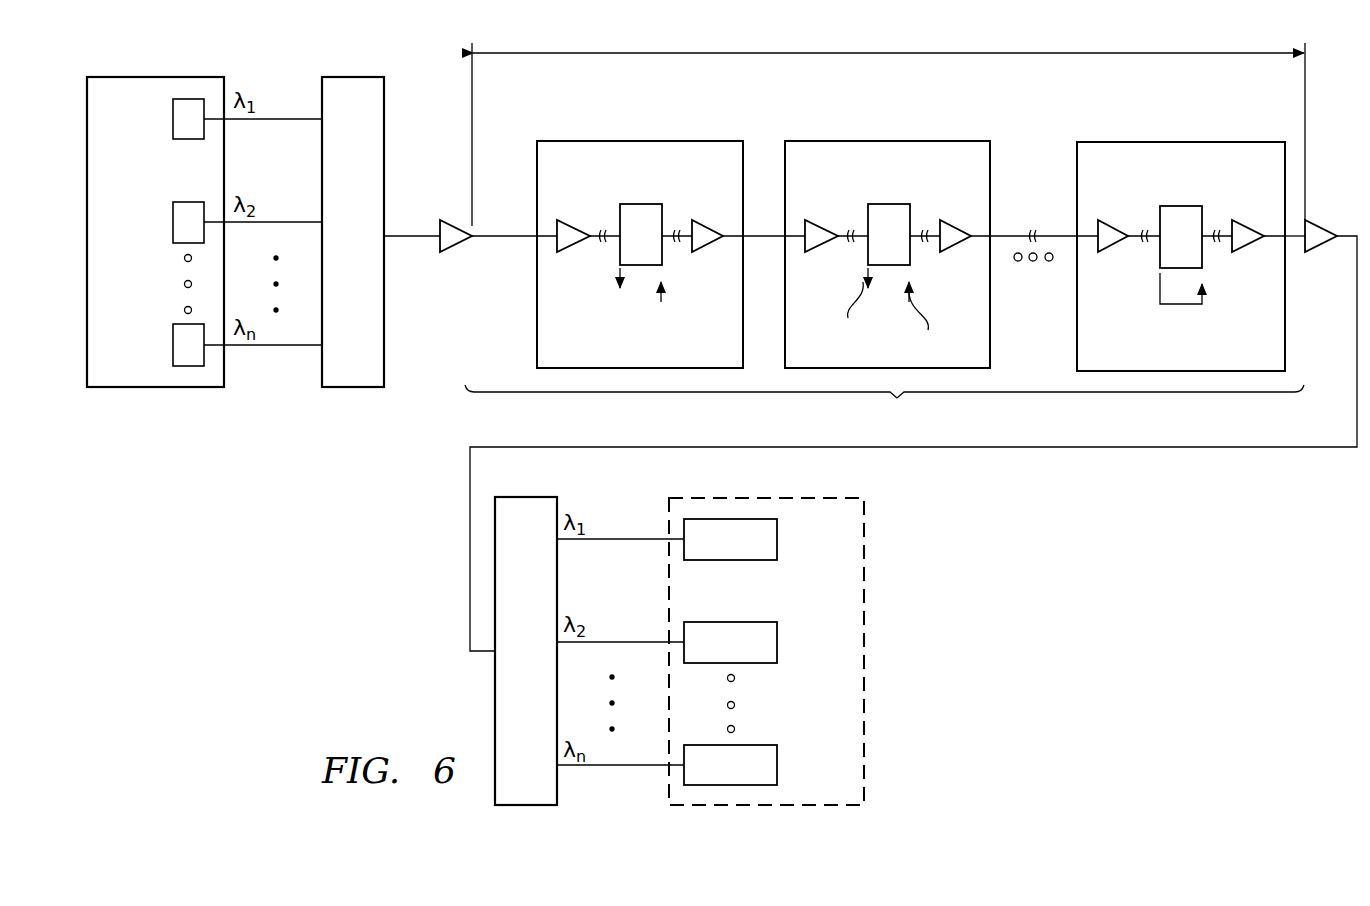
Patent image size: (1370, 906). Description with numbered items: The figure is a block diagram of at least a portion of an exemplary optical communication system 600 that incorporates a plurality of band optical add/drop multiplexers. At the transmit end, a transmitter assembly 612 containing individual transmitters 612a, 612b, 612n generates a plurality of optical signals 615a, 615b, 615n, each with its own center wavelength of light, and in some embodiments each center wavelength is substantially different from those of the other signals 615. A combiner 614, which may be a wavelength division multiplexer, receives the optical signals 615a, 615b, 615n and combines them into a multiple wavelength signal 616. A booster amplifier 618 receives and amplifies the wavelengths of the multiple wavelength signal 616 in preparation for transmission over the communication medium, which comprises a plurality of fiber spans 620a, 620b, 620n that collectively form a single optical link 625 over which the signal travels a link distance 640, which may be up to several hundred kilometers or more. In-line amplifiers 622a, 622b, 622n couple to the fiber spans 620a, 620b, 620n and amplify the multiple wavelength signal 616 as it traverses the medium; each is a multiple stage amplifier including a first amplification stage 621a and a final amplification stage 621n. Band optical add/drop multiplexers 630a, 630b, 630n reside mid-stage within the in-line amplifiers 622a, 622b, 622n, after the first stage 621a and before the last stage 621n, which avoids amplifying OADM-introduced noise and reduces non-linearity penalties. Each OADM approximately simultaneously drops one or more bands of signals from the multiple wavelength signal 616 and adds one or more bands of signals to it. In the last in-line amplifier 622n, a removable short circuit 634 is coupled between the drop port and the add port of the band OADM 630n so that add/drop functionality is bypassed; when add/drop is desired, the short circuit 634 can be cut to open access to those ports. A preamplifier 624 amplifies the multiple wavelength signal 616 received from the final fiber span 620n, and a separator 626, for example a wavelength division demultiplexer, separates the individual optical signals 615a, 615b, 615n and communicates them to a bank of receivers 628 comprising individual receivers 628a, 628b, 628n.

The optical communication system 600 is at (1158, 608).
The transmitter assembly 612 is at (157, 77).
The transmitter 612a is at (173, 117).
The transmitter 612b is at (173, 221).
The transmitter 612n is at (173, 348).
The combiner 614 is at (336, 258).
The optical signals 615 is at (642, 315).
The optical signal 615a is at (300, 118).
The optical signal 615b is at (300, 221).
The optical signal 615n is at (293, 348).
The multiple wavelength signal 616 is at (408, 232).
The booster amplifier 618 is at (455, 247).
The fiber span 620a is at (515, 233).
The fiber span 620b is at (764, 236).
The fiber span 620n is at (470, 555).
The first amplification stage 621a is at (570, 222).
The final amplification stage 621n is at (705, 252).
The in-line amplifier 622a is at (640, 227).
The in-line amplifier 622b is at (887, 227).
The in-line amplifier 622n is at (1181, 232).
The preamplifier 624 is at (1318, 226).
The optical link 625 is at (884, 403).
The separator 626 is at (510, 676).
The bank of receivers 628 is at (800, 651).
The receiver 628a is at (778, 540).
The receiver 628b is at (778, 642).
The receiver 628n is at (778, 765).
The band optical add/drop multiplexer 630a is at (640, 204).
The band optical add/drop multiplexer 630b is at (888, 204).
The band optical add/drop multiplexer 630n is at (1178, 206).
The removable short circuit 634 is at (1178, 304).
The link distance 640 is at (906, 52).